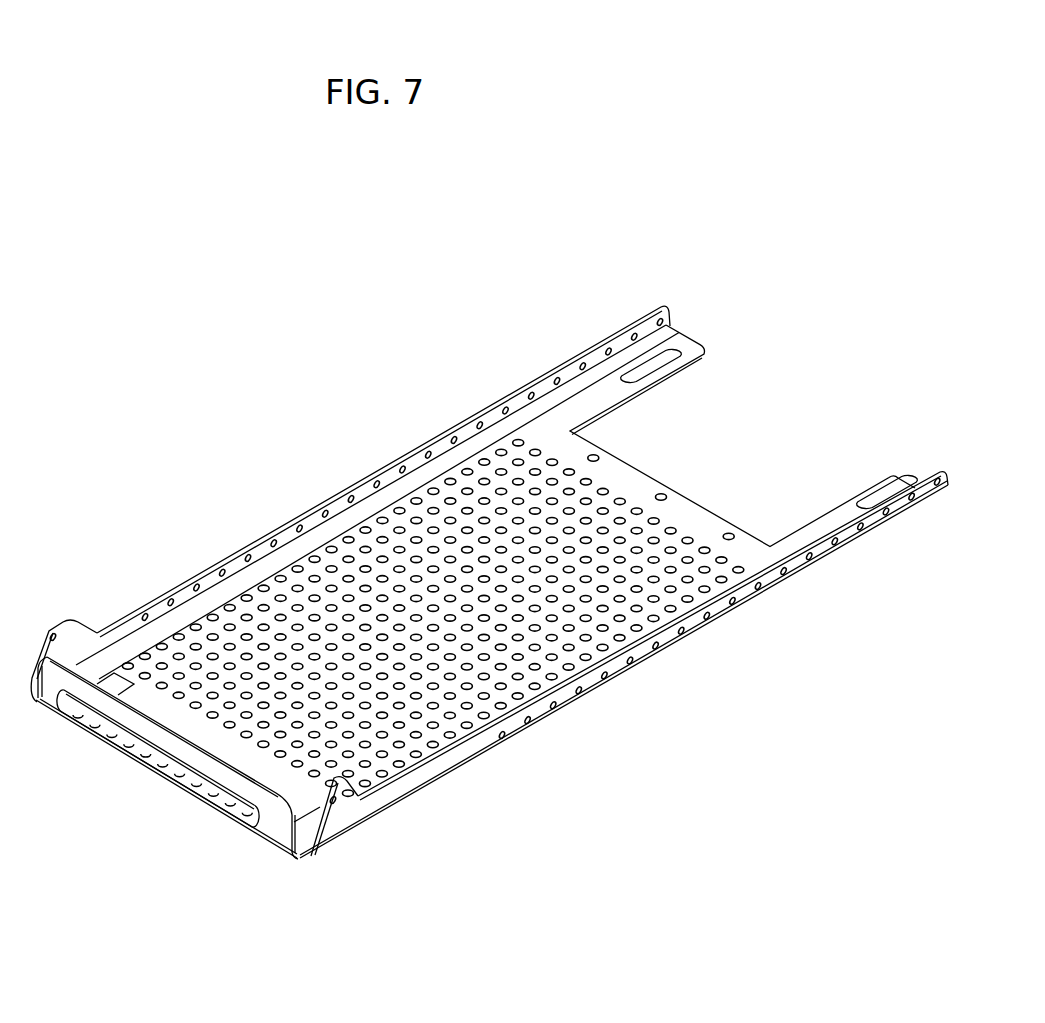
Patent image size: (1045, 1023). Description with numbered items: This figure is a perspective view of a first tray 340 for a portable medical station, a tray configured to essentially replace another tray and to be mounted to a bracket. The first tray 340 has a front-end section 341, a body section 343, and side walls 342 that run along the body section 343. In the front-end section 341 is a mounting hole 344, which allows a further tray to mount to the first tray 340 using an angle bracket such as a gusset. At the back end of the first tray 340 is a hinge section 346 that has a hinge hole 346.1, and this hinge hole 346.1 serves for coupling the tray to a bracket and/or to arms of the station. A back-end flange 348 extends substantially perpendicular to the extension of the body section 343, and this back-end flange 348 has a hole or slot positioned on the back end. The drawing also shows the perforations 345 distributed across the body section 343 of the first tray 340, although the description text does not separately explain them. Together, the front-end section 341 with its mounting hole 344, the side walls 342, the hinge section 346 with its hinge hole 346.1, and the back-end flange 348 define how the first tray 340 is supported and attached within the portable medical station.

The first tray 340 is at (433, 300).
The front-end section 341 is at (702, 354).
The side walls 342 is at (357, 477).
The body section 343 is at (206, 624).
The mounting hole 344 is at (645, 366).
The perforations 345 is at (318, 560).
The hinge section 346 is at (335, 813).
The hinge hole 346.1 is at (337, 801).
The back-end flange 348 is at (255, 808).